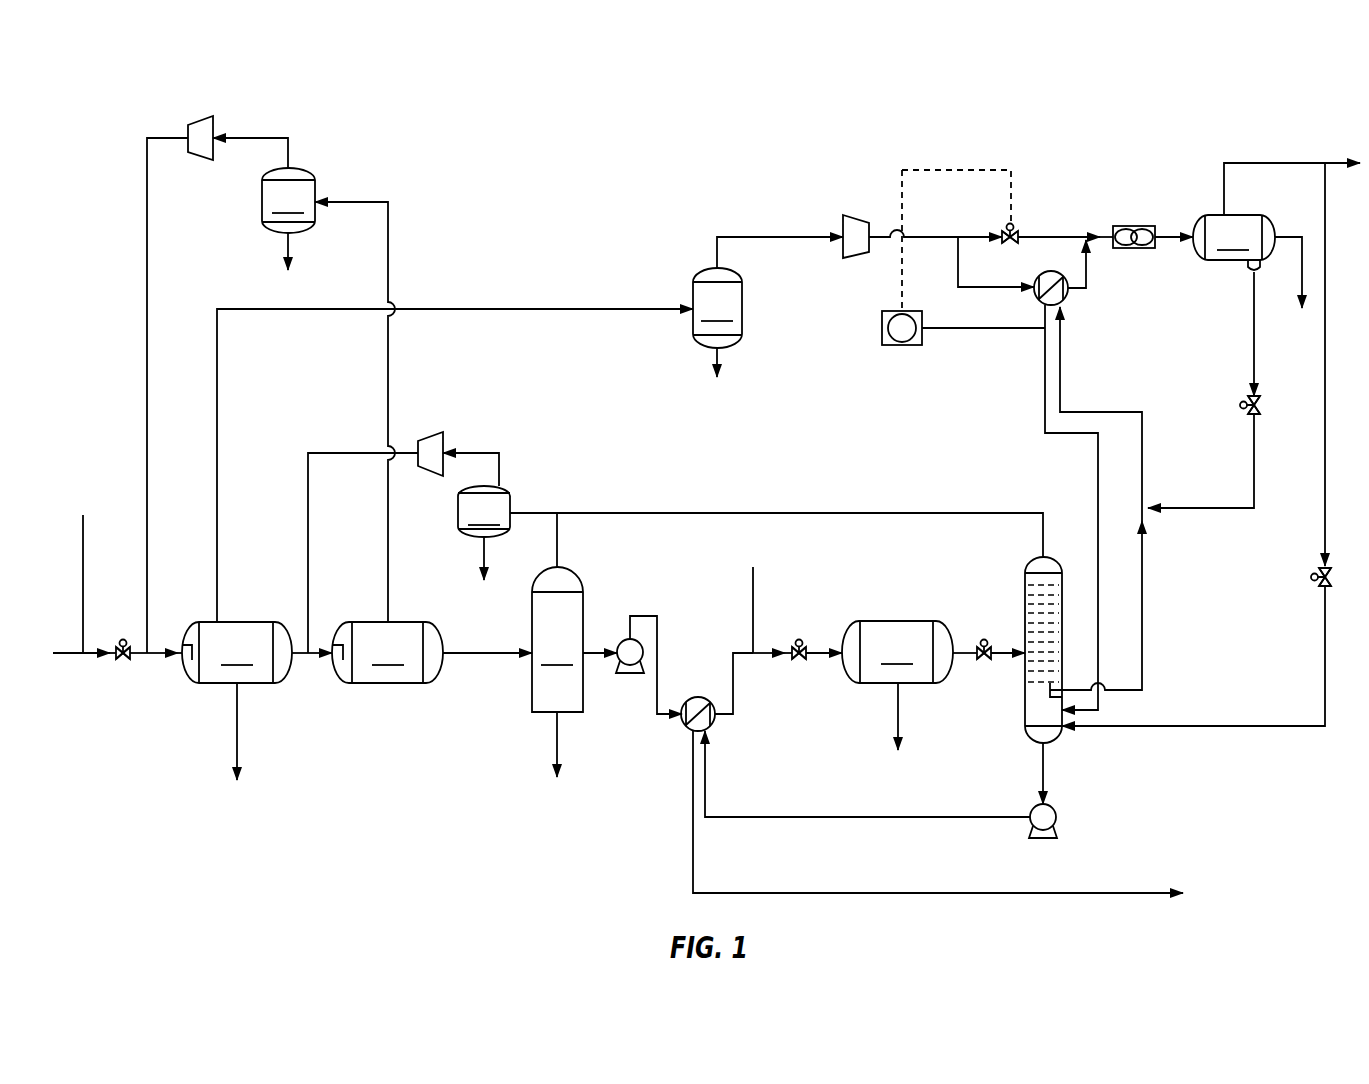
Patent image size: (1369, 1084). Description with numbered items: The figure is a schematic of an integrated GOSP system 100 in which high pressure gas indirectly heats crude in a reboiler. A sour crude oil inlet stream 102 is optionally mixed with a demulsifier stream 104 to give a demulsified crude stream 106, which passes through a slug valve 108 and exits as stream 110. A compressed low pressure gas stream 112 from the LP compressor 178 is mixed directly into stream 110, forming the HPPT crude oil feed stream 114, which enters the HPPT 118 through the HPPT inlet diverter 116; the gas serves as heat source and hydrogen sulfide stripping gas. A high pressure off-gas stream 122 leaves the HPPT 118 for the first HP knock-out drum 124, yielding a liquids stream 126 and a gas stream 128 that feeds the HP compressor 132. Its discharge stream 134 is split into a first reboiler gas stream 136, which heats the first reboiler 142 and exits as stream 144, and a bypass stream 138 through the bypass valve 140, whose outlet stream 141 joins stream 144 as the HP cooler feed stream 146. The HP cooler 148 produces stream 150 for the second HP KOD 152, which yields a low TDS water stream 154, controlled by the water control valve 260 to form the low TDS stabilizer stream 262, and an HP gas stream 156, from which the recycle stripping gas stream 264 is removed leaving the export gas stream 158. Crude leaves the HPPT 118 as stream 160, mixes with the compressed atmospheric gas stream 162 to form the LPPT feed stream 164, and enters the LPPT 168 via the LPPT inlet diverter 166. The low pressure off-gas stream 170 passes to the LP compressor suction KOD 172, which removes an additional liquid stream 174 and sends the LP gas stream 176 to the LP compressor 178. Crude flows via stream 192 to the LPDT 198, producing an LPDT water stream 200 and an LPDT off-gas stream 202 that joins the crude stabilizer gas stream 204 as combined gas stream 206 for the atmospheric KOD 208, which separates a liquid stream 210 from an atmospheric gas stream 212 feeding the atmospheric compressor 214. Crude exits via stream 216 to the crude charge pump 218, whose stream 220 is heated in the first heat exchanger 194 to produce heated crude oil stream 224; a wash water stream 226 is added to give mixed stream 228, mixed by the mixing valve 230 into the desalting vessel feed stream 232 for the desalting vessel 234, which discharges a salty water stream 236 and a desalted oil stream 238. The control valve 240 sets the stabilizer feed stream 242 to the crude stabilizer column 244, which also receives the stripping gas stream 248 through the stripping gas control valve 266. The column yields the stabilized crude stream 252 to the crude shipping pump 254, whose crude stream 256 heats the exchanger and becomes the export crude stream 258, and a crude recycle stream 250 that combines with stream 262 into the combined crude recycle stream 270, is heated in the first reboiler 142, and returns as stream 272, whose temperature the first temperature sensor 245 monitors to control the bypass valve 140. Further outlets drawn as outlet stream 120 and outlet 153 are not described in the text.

The GOSP system 100 is at (127, 78).
The sour crude oil inlet stream 102 is at (63, 660).
The demulsifier stream 104 is at (84, 527).
The demulsified crude stream 106 is at (92, 660).
The slug valve 108 is at (122, 640).
The stream 110 is at (140, 660).
The compressed low pressure gas stream 112 is at (146, 322).
The HPPT crude oil feed stream 114 is at (157, 665).
The HPPT inlet diverter 116 is at (186, 640).
The HPPT 118 is at (237, 652).
The bottoms stream 120 is at (240, 735).
The high pressure off-gas stream 122 is at (445, 309).
The first HP knock-out drum 124 is at (717, 308).
The liquids stream 126 is at (712, 358).
The gas stream 128 is at (716, 250).
The HP compressor 132 is at (852, 215).
The stream 134 is at (948, 240).
The first reboiler gas stream 136 is at (968, 284).
The bypass stream 138 is at (972, 232).
The bypass valve 140 is at (1008, 228).
The stream 141 is at (1045, 235).
The first reboiler 142 is at (1070, 298).
The stream 144 is at (1090, 268).
The HP cooler feed stream 146 is at (1095, 235).
The HP cooler 148 is at (1132, 225).
The stream 150 is at (1170, 235).
The second HP KOD 152 is at (1234, 242).
The liquid outlet line 153 is at (1285, 235).
The low TDS water stream 154 is at (1252, 335).
The HP gas stream 156 is at (1275, 160).
The export gas stream 158 is at (1340, 160).
The stream 160 is at (298, 650).
The compressed atmospheric gas stream 162 is at (307, 502).
The LPPT feed stream 164 is at (312, 660).
The LPPT inlet diverter 166 is at (336, 640).
The LPPT 168 is at (387, 652).
The low pressure off-gas stream 170 is at (390, 572).
The LP compressor suction KOD 172 is at (288, 200).
The additional liquid stream 174 is at (292, 252).
The LP gas stream 176 is at (242, 137).
The LP compressor 178 is at (190, 124).
The stream 192 is at (458, 660).
The first heat exchanger 194 is at (682, 720).
The LPDT 198 is at (557, 639).
The LPDT water stream 200 is at (555, 738).
The LPDT off-gas stream 202 is at (560, 552).
The crude stabilizer gas stream 204 is at (810, 512).
The combined gas stream 206 is at (530, 512).
The atmospheric KOD 208 is at (484, 511).
The liquid stream 210 is at (490, 565).
The atmospheric gas stream 212 is at (468, 452).
The atmospheric compressor 214 is at (428, 438).
The stream 216 is at (592, 660).
The crude charge pump 218 is at (612, 645).
The stream 220 is at (648, 616).
The heated crude oil stream 224 is at (732, 672).
The wash water stream 226 is at (755, 572).
The mixed stream 228 is at (763, 655).
The mixing valve 230 is at (800, 640).
The desalting vessel feed stream 232 is at (815, 655).
The desalting vessel 234 is at (897, 652).
The salty water stream 236 is at (893, 725).
The desalted oil stream 238 is at (968, 660).
The control valve 240 is at (982, 640).
The stabilizer feed stream 242 is at (1000, 655).
The crude stabilizer column 244 is at (1032, 556).
The first temperature sensor 245 is at (882, 312).
The stripping gas stream 248 is at (1323, 660).
The crude recycle stream 250 is at (1143, 620).
The stabilized crude stream 252 is at (1045, 762).
The crude shipping pump 254 is at (1056, 820).
The crude stream 256 is at (780, 815).
The export crude stream 258 is at (822, 892).
The water control valve 260 is at (1240, 405).
The low TDS stabilizer stream 262 is at (1252, 465).
The recycle stripping gas stream 264 is at (1323, 505).
The stripping gas control valve 266 is at (1312, 578).
The combined crude recycle stream 270 is at (1088, 412).
The stream 272 is at (1055, 435).